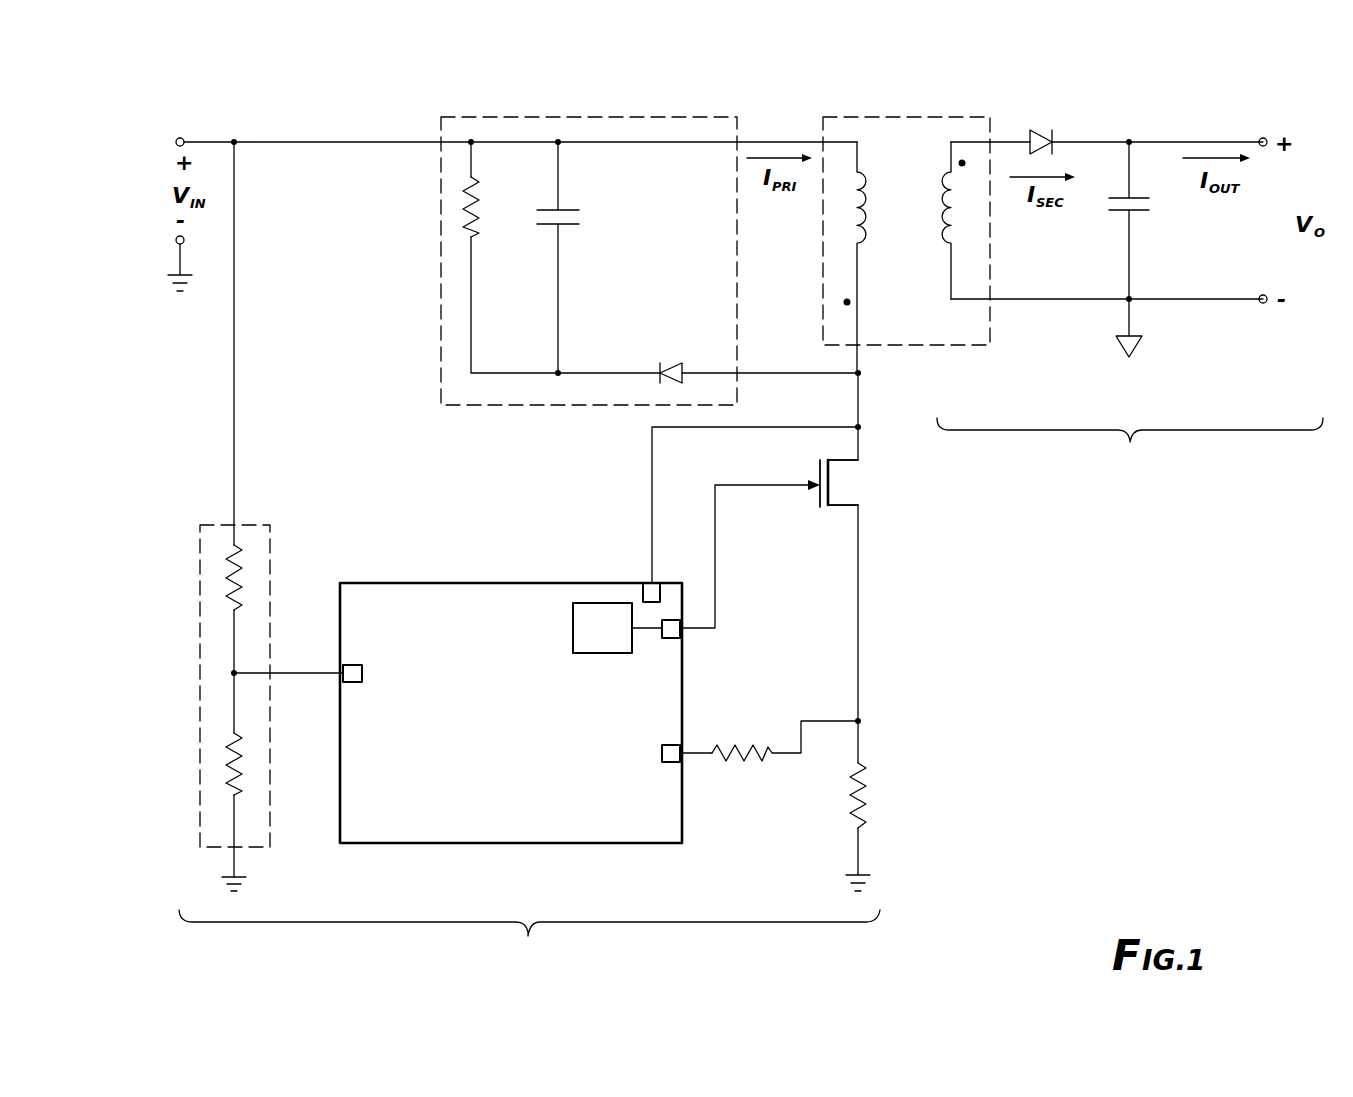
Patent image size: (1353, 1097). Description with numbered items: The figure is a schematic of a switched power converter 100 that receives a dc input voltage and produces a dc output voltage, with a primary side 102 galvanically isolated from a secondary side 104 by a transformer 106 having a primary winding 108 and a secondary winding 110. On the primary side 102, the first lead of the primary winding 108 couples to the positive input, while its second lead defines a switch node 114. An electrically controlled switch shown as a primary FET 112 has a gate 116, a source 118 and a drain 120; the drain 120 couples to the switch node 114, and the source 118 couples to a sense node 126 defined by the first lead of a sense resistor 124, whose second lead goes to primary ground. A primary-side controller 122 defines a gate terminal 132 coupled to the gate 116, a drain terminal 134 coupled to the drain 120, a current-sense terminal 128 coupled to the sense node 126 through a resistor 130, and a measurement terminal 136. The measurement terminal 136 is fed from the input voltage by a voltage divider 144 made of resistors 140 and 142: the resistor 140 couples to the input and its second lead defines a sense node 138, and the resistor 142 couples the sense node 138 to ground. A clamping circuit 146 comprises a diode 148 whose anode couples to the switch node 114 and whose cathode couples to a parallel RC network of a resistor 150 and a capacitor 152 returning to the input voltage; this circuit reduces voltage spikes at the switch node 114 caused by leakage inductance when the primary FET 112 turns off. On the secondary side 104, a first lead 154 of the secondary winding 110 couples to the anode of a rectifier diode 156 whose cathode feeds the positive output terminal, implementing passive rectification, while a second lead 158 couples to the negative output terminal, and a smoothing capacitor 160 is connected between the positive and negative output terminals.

The power converter 100 is at (153, 108).
The primary side 102 is at (528, 936).
The secondary side 104 is at (1130, 442).
The transformer 106 is at (990, 275).
The primary winding 108 is at (865, 233).
The secondary winding 110 is at (942, 243).
The primary FET 112 is at (833, 508).
The switch node 114 is at (860, 425).
The gate 116 is at (818, 482).
The source 118 is at (858, 517).
The drain 120 is at (858, 450).
The primary-side controller 122 is at (511, 713).
The sense resistor 124 is at (870, 783).
The sense node 126 is at (860, 720).
The current-sense terminal 128 is at (683, 750).
The resistor 130 is at (758, 765).
The gate terminal 132 is at (690, 638).
The drain terminal 134 is at (646, 580).
The measurement terminal 136 is at (362, 670).
The sense node 138 is at (240, 669).
The resistor 140 is at (227, 578).
The resistor 142 is at (227, 778).
The voltage divider 144 is at (200, 657).
The clamping circuit 146 is at (460, 407).
The diode 148 is at (673, 360).
The resistor 150 is at (468, 232).
The capacitor 152 is at (573, 225).
The first lead 154 is at (950, 157).
The diode 156 is at (1040, 132).
The second lead 158 is at (951, 298).
The smoothing capacitor 160 is at (1138, 213).